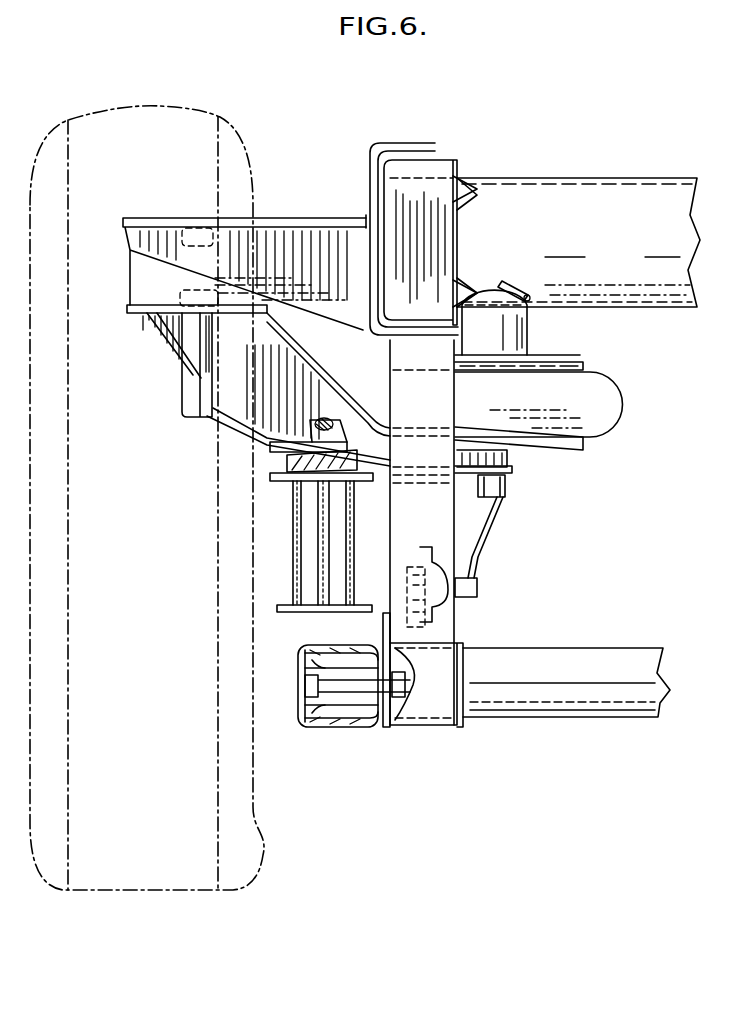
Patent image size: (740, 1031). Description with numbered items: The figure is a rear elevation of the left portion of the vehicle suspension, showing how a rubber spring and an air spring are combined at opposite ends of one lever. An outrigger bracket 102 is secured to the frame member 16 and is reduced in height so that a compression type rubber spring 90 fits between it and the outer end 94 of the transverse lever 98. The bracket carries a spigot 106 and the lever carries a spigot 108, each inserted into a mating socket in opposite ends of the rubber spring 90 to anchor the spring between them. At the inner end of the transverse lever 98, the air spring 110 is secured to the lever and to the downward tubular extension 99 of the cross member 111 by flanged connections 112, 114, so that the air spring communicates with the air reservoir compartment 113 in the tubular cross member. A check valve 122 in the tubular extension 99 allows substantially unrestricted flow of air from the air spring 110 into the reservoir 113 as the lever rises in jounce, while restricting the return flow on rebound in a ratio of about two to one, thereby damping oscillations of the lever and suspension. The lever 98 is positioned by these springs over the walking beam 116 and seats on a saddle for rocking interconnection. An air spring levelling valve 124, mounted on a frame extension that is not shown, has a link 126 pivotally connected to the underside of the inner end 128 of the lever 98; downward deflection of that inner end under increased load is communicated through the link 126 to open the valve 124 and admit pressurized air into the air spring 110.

The frame member 16 is at (408, 143).
The rubber spring 90 is at (132, 276).
The outer end of transverse lever 94 is at (138, 314).
The transverse lever 98 is at (231, 420).
The downward tubular extension 99 is at (528, 332).
The outrigger bracket 102 is at (272, 218).
The spigot 106 is at (180, 240).
The spigot 108 is at (216, 308).
The air spring 110 is at (603, 424).
The cross member 111 is at (608, 178).
The flanged connection 112 is at (300, 438).
The air reservoir compartment 113 is at (619, 283).
The flanged connection 114 is at (580, 363).
The walking beam 116 is at (296, 540).
The check valve 122 is at (514, 299).
The air spring levelling valve 124 is at (477, 592).
The link 126 is at (482, 548).
The inner end of lever 128 is at (548, 457).